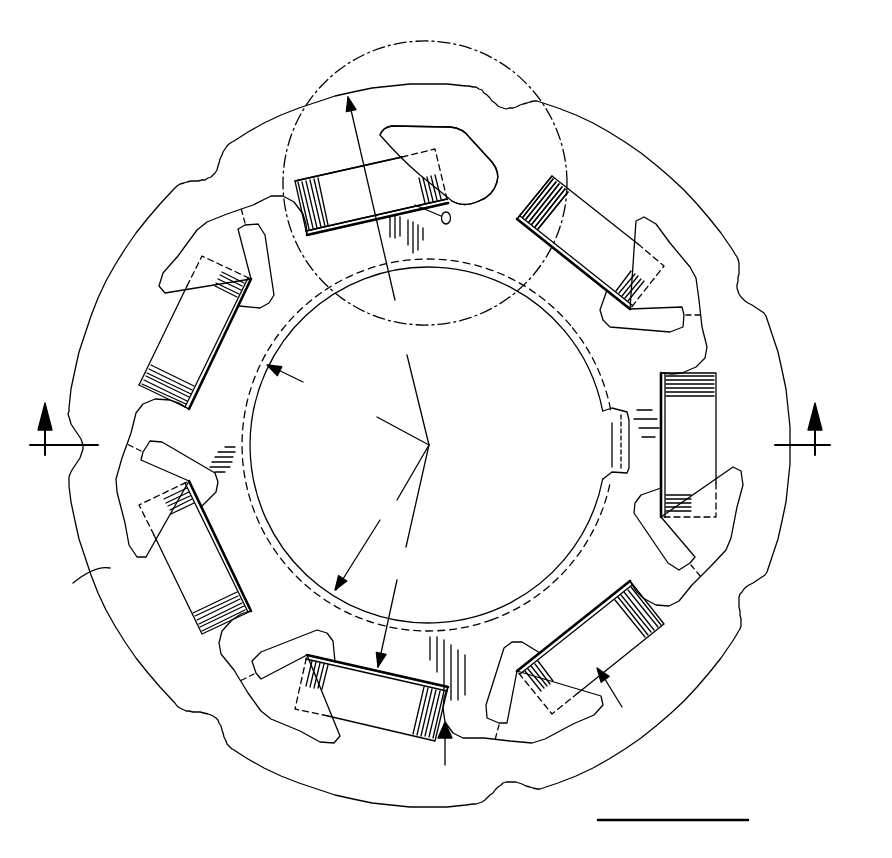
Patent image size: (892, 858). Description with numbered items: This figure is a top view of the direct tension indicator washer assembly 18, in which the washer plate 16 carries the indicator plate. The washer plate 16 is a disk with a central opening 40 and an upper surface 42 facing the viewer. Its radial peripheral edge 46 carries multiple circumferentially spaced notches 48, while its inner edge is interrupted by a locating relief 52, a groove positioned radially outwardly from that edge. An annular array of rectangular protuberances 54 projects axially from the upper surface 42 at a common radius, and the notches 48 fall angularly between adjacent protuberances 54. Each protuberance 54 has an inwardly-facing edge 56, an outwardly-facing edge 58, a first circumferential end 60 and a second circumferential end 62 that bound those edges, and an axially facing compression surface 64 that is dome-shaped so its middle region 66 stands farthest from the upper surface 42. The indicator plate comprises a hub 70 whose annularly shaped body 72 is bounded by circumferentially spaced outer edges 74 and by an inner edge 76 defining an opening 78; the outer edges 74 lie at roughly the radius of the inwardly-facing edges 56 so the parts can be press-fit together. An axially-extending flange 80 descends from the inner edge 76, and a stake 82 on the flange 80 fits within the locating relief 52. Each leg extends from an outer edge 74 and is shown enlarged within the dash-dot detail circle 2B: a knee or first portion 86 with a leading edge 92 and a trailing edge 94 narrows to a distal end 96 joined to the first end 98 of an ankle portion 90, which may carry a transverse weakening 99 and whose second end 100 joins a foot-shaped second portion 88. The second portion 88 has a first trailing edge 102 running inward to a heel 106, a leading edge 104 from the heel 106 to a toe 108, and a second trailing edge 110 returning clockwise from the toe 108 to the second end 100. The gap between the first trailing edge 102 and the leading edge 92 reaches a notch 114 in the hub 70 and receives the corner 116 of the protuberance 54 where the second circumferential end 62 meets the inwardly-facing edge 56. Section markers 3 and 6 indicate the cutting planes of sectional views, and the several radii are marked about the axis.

The direct tension indicator washer assembly 18 is at (430, 420).
The washer plate 16 is at (447, 445).
The radial peripheral edge 46 is at (438, 445).
The notches 48 is at (438, 445).
The weakening 99 is at (700, 310).
The first or upper surface 42 is at (75, 585).
The annularly shaped body 72 is at (565, 304).
The axially-extending flange 80 is at (597, 378).
The opening 78 is at (590, 525).
The inner edge 76 is at (412, 622).
The opening 40 is at (580, 372).
The hub 70 is at (547, 612).
The locating relief 52 is at (598, 472).
The stake 82 is at (611, 447).
The inwardly-facing edge 56 is at (220, 342).
The protuberances 54 is at (405, 459).
The outer edges 74 is at (563, 248).
The first circumferential end 60 is at (153, 390).
The middle region 66 is at (170, 330).
The axially facing compression surface 64 is at (187, 318).
The outwardly-facing edge 58 is at (180, 332).
The second circumferential end 62 is at (218, 258).
The second portion 88 is at (435, 156).
The toe 108 is at (377, 133).
The second trailing edge 110 is at (455, 128).
The second end 100 is at (480, 134).
The ankle portion 90 is at (490, 155).
The first end 98 is at (513, 165).
The leading edge 92 is at (487, 184).
The first trailing edge 102 is at (482, 202).
The corner 116 is at (448, 218).
The notch 114 is at (445, 224).
The leading edge 104 is at (400, 180).
The heel 106 is at (420, 213).
The trailing edge 94 is at (520, 205).
The distal end 96 is at (527, 177).
The first portion 86 is at (547, 190).
The section line 6 is at (537, 733).
The section line 3 is at (430, 416).
The detail circle 2B is at (345, 70).